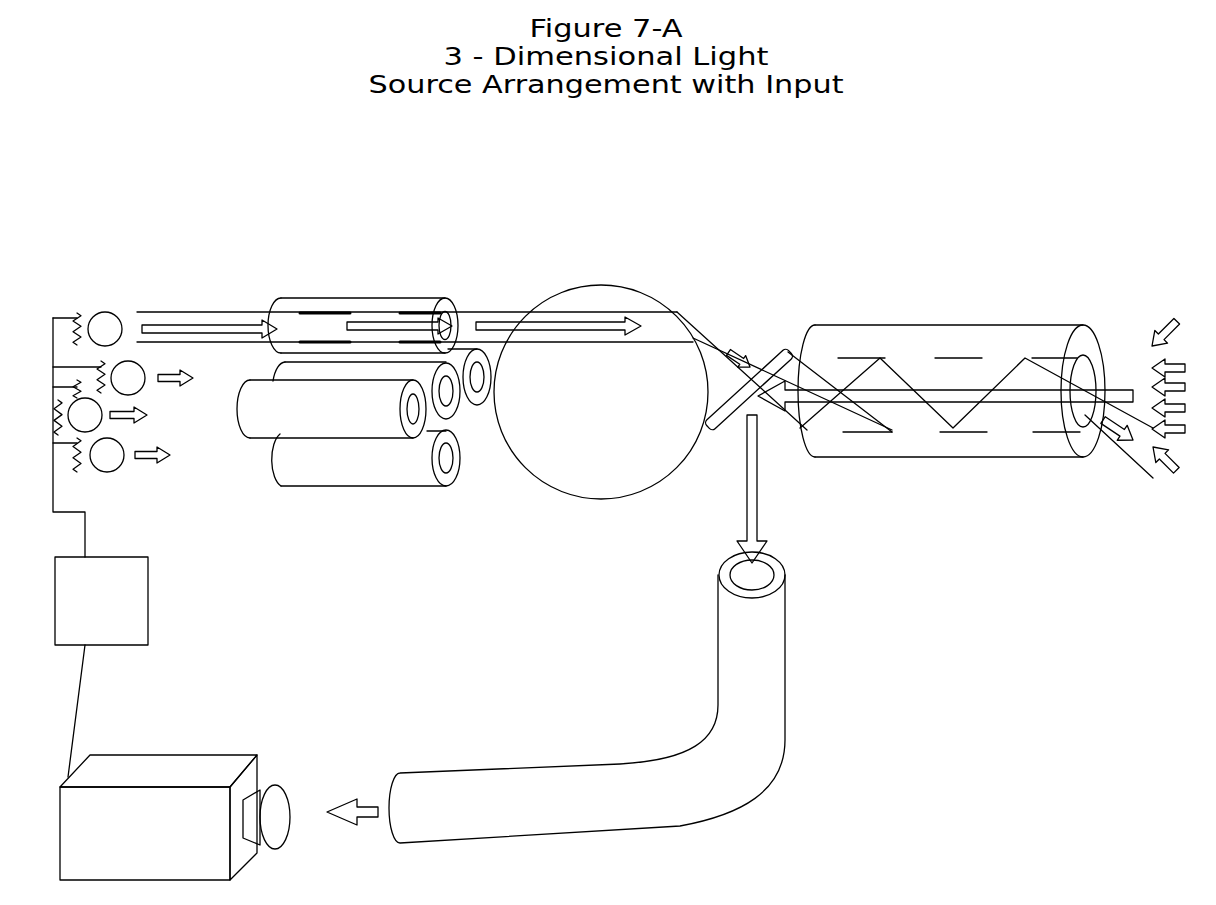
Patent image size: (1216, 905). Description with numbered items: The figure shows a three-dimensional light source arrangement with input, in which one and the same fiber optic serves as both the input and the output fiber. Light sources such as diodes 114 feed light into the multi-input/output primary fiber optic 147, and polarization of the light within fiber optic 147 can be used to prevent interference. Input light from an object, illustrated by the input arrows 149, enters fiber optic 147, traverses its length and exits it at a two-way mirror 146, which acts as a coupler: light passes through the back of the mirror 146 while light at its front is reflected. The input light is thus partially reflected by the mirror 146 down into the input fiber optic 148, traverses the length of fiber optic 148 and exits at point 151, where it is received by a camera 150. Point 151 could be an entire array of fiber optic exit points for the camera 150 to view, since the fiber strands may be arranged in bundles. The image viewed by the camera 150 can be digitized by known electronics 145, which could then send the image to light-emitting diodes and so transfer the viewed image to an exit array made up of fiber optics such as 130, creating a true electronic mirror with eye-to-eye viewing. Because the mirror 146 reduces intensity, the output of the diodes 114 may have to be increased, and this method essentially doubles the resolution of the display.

The diodes 114 is at (80, 312).
The fiber optics 130 is at (997, 412).
The electronics 145 is at (148, 592).
The two-way mirror 146 is at (778, 348).
The multi-input/output (primary) fiber optic 147 is at (945, 337).
The input fiber optic 148 is at (785, 653).
The input arrows 149 is at (1173, 328).
The camera 150 is at (170, 767).
The exit point 151 is at (360, 805).